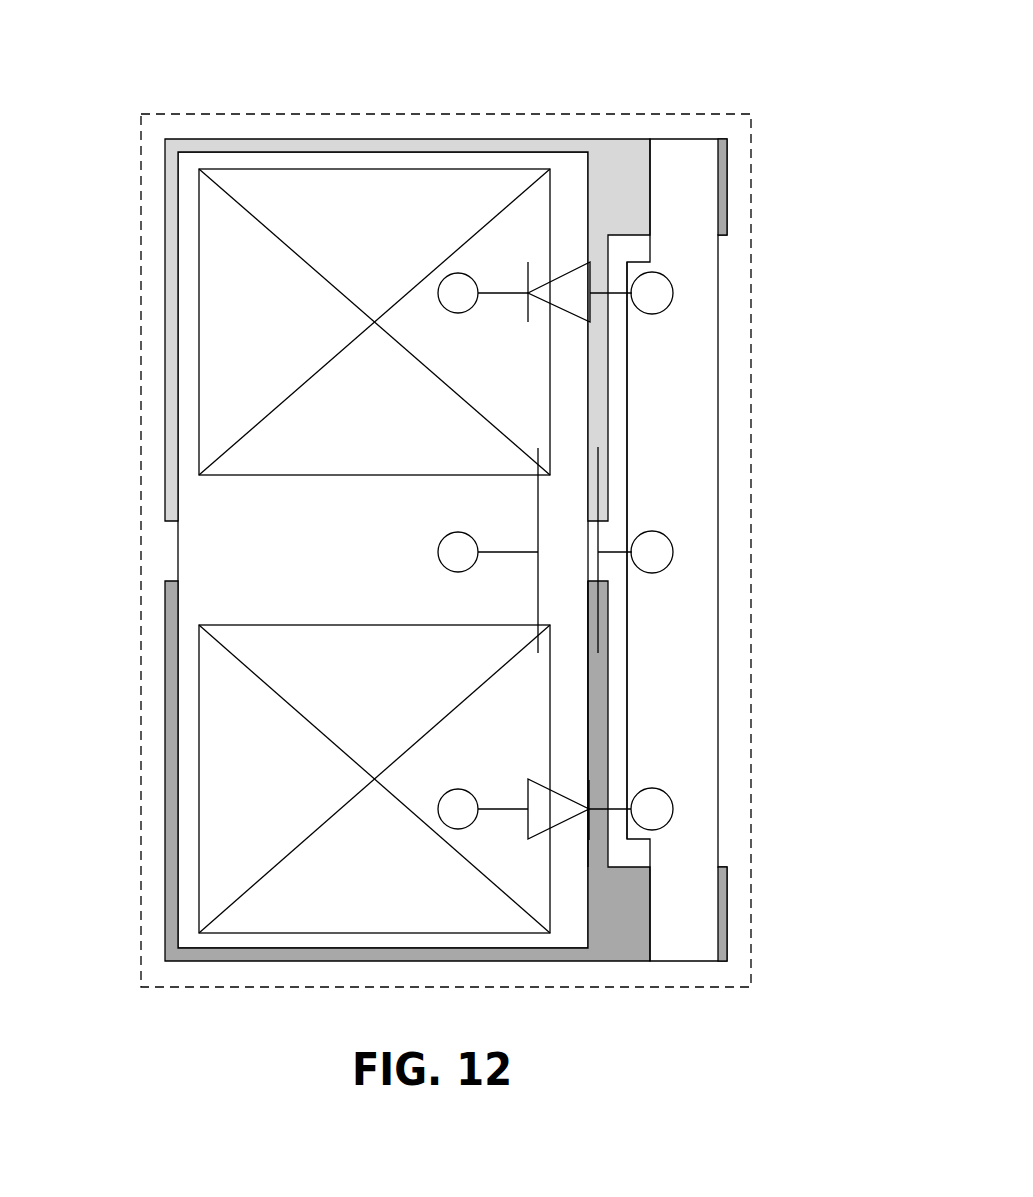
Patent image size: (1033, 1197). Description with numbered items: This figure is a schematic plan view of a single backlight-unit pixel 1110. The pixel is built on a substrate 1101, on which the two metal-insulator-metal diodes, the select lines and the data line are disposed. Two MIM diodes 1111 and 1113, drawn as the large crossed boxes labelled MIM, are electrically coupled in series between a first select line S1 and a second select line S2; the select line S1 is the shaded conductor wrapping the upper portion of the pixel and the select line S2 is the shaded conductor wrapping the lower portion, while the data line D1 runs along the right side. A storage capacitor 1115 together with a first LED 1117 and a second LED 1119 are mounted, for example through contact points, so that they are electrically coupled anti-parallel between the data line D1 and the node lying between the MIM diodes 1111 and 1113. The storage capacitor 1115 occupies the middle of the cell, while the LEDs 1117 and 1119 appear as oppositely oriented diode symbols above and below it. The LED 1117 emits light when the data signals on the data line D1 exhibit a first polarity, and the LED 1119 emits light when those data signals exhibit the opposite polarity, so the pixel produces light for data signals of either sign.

The pixel 1110 is at (798, 100).
The substrate 1101 is at (430, 120).
The select line S1 is at (253, 148).
The select line S2 is at (255, 962).
The data line D1 is at (680, 155).
The MIM diode 1111 is at (155, 270).
The MIM diode 1113 is at (157, 704).
The storage capacitor 1115 is at (647, 495).
The first LED 1117 is at (575, 735).
The second LED 1119 is at (617, 260).